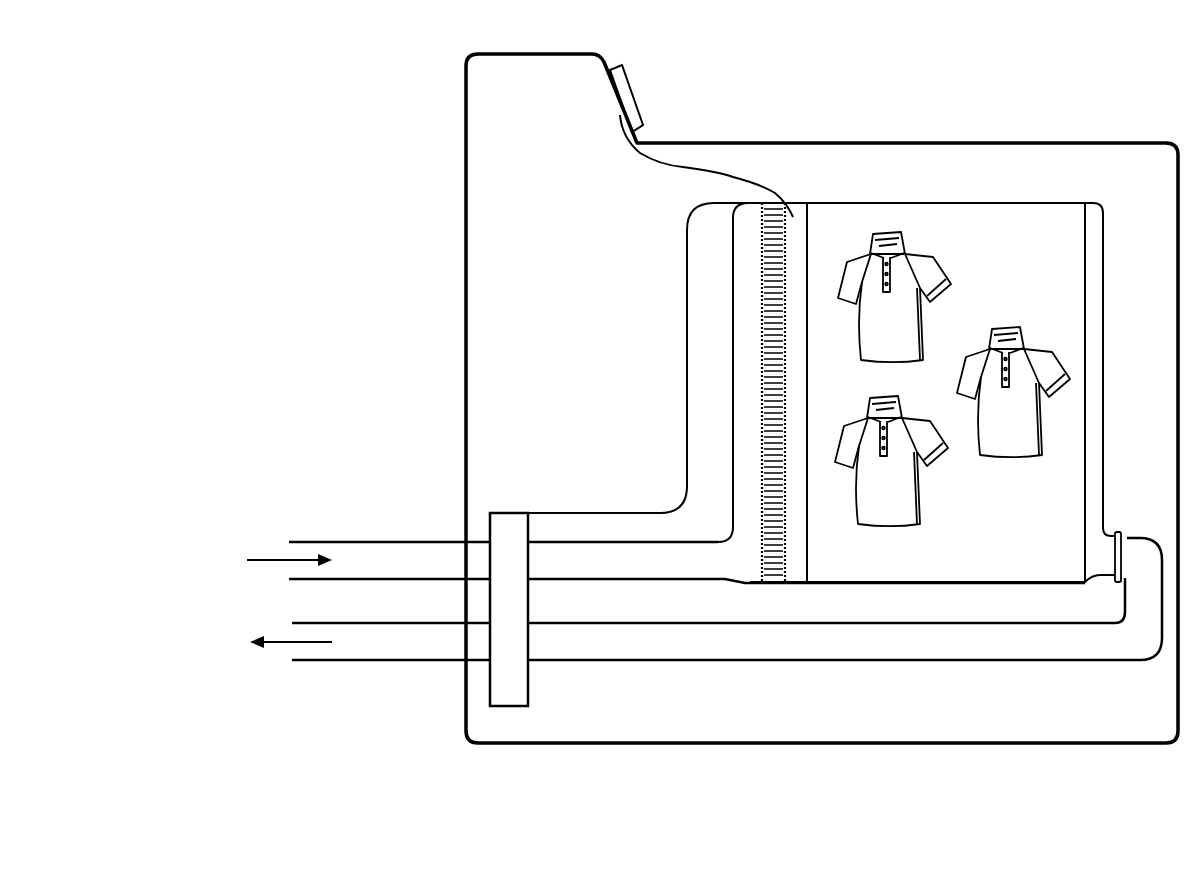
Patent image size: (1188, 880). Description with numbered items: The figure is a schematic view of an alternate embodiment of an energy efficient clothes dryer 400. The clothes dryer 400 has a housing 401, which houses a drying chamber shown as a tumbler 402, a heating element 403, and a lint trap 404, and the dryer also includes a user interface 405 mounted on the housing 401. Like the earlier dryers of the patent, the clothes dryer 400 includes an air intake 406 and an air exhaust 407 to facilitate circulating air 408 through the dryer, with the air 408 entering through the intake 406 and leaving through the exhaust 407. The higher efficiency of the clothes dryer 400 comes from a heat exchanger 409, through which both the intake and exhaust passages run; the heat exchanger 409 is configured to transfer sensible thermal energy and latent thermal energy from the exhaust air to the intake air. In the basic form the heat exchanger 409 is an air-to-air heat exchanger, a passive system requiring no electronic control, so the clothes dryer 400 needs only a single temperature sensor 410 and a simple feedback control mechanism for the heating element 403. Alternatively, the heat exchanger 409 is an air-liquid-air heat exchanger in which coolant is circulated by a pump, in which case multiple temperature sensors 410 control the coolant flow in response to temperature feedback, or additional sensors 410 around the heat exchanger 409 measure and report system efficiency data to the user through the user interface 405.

The clothes dryer 400 is at (368, 68).
The housing 401 is at (1113, 143).
The tumbler 402 is at (1003, 203).
The heating element 403 is at (775, 208).
The lint trap 404 is at (1118, 530).
The user interface 405 is at (634, 97).
The air intake 406 is at (382, 542).
The air exhaust 407 is at (408, 661).
The air 408 is at (262, 558).
The heat exchanger 409 is at (509, 513).
The temperature sensor 410 is at (797, 217).